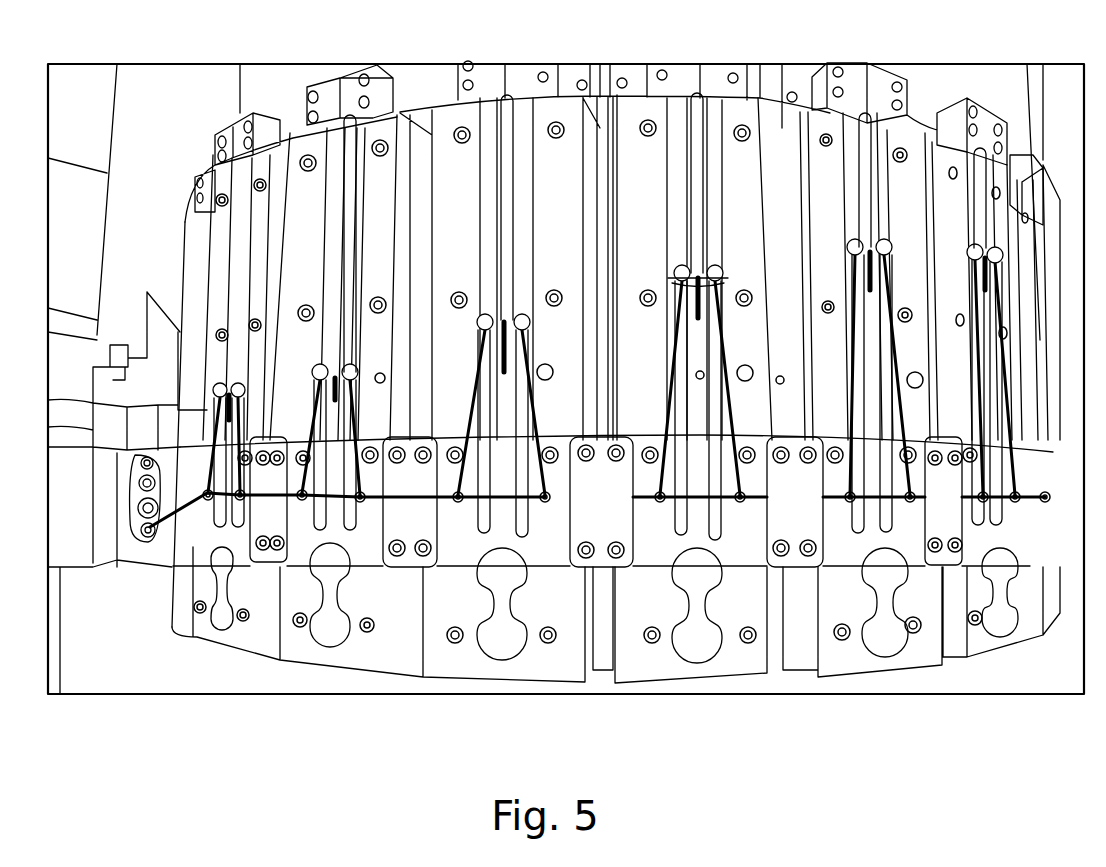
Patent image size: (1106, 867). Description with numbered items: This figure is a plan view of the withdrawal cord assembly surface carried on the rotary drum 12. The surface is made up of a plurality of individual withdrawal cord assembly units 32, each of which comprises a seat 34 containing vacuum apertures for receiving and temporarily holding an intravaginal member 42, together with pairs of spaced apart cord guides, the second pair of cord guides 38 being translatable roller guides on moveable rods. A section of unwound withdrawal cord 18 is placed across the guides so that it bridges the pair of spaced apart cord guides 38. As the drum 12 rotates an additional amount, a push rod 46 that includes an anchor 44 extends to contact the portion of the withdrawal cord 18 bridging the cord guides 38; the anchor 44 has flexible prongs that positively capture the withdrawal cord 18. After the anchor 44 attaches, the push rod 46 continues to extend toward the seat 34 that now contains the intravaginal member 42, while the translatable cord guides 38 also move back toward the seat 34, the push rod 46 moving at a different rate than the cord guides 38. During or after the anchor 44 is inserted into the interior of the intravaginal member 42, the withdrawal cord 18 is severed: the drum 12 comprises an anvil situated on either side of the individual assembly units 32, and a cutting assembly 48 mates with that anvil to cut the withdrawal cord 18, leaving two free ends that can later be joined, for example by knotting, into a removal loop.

The drum 12 is at (929, 678).
The withdrawal cord 18 is at (767, 500).
The withdrawal cord assembly unit 32 is at (537, 660).
The seat 34 is at (697, 663).
The second pair of spaced apart cord guides 38 is at (523, 315).
The intravaginal member 42 is at (675, 268).
The anchor 44 is at (500, 427).
The push rod 46 is at (333, 430).
The cutting assembly 48 is at (142, 566).